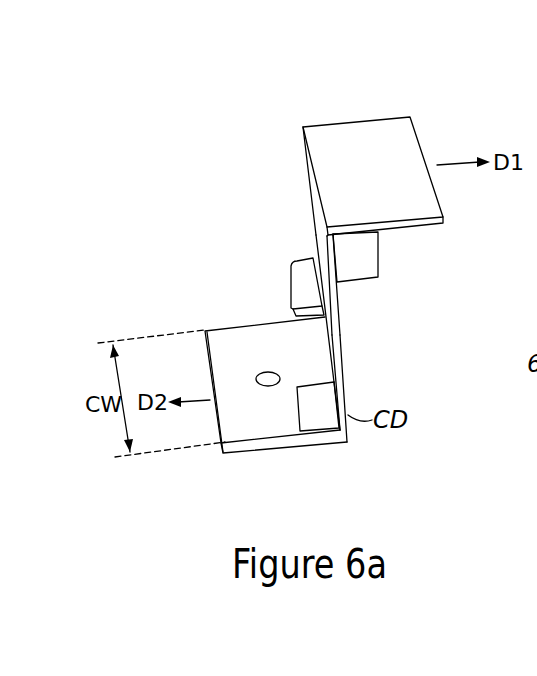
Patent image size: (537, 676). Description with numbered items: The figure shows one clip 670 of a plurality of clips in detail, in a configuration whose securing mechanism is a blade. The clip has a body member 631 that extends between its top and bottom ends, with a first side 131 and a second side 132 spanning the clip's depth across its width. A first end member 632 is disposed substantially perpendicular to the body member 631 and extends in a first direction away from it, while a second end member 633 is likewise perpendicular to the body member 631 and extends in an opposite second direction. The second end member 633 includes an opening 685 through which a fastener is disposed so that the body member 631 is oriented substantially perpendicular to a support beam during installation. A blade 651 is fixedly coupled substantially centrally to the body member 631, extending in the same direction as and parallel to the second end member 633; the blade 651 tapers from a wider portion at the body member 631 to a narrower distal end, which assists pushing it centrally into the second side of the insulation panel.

The clip 670 is at (322, 94).
The first end member 632 is at (380, 100).
The body member 631 is at (360, 326).
The first side 131 is at (312, 185).
The second side 132 is at (347, 377).
The blade 651 is at (295, 272).
The second end member 633 is at (202, 480).
The opening 685 is at (268, 382).